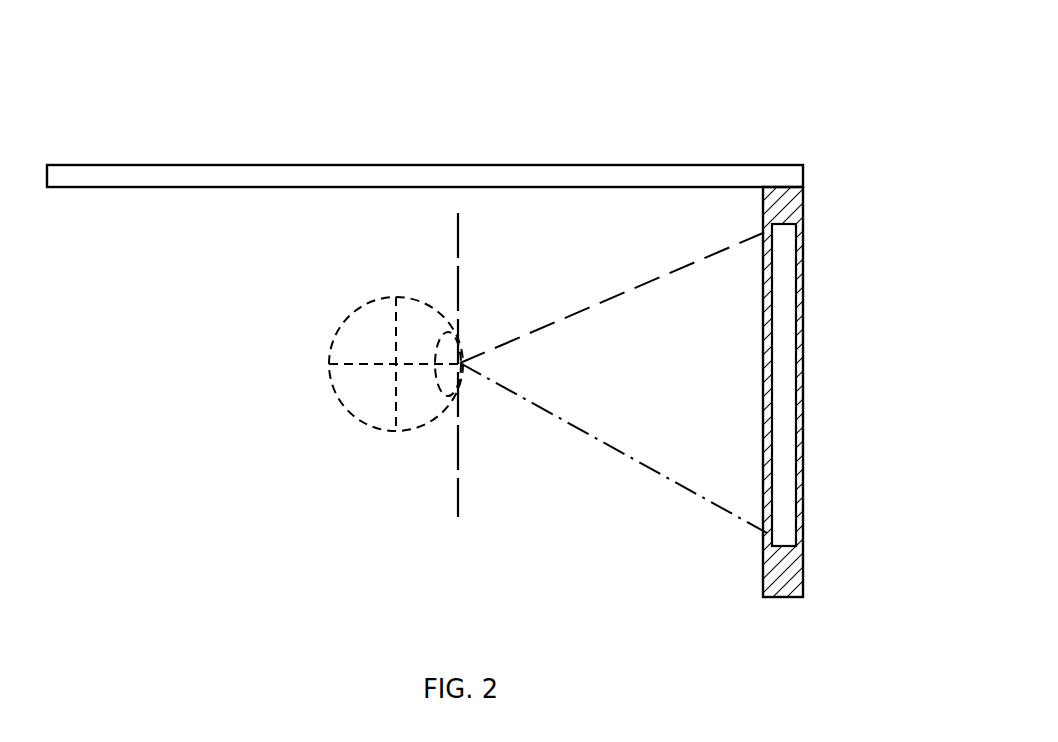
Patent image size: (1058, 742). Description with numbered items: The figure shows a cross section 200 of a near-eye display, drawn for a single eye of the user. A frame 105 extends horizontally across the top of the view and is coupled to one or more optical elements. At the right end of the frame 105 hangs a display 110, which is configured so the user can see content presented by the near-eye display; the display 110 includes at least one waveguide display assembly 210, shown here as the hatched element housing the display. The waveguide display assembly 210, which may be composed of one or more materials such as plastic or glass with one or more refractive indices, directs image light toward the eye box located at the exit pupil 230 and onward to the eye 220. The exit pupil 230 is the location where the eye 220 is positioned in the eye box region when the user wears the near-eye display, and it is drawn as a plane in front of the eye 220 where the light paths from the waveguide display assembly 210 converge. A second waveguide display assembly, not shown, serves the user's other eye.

The cross section 200 is at (172, 125).
The frame 105 is at (655, 164).
The waveguide display assembly 210 is at (778, 257).
The display 110 is at (803, 477).
The eye 220 is at (352, 313).
The exit pupil 230 is at (452, 481).